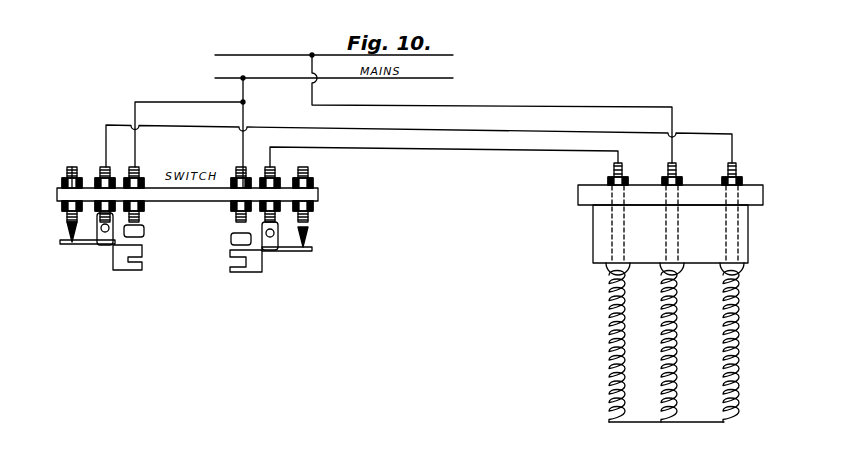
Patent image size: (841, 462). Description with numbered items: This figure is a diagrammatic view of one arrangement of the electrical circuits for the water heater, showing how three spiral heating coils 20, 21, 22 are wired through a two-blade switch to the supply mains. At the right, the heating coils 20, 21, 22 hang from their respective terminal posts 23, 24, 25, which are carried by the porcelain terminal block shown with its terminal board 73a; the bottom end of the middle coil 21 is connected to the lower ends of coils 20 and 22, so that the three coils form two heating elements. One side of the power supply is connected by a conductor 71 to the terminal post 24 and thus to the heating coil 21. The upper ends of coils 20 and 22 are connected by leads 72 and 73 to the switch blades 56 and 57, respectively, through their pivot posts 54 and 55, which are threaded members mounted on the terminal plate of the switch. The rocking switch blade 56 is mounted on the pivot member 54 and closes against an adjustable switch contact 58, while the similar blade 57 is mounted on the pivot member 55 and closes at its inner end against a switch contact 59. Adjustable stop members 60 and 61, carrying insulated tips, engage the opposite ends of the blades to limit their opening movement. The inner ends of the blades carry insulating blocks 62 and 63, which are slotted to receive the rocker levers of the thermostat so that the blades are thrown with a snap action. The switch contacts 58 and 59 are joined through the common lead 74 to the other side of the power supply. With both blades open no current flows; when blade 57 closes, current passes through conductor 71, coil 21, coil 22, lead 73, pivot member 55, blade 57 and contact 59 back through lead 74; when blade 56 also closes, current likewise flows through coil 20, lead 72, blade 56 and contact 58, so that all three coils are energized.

The heating coil 20 is at (609, 345).
The heating coil 21 is at (676, 343).
The heating coil 22 is at (740, 333).
The terminal post 23 is at (612, 168).
The terminal post 24 is at (686, 169).
The terminal post 25 is at (740, 171).
The switch pivot member 54 is at (281, 233).
The switch pivot member 55 is at (96, 228).
The switch blade 56 is at (297, 251).
The switch blade 57 is at (86, 245).
The switch contact 58 is at (230, 238).
The switch contact 59 is at (144, 233).
The stop member 60 is at (312, 231).
The stop member 61 is at (62, 228).
The block 62 is at (256, 271).
The block 63 is at (120, 268).
The conductor 71 is at (378, 106).
The lead 72 is at (275, 155).
The lead 73 is at (105, 146).
The terminal board 73a is at (758, 197).
The common lead 74 is at (260, 113).